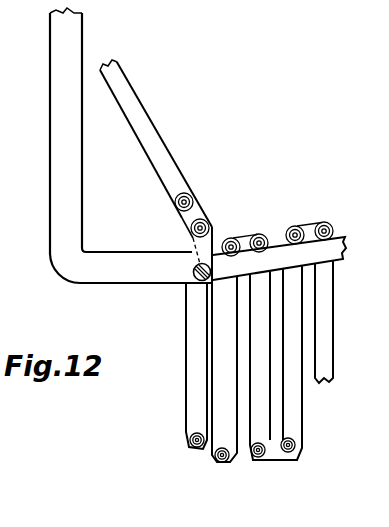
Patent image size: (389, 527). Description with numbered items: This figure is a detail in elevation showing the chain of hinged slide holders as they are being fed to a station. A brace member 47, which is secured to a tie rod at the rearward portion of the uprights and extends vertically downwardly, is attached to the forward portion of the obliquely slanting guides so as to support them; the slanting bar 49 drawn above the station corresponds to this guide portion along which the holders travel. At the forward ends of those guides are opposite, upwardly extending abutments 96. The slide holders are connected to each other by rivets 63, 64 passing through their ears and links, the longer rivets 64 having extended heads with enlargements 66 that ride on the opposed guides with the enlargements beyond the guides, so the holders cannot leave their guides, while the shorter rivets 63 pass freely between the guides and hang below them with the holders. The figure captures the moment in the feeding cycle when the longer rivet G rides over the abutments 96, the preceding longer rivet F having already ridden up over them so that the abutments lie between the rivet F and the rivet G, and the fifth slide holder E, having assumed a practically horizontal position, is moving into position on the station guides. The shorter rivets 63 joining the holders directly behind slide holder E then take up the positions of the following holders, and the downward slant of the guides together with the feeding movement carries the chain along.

The brace member 47 is at (58, 200).
The sliding bar 49 is at (138, 126).
The abutments 96 is at (190, 238).
The enlargements 66 is at (255, 235).
The rivets 64 is at (320, 226).
The rivets 63 is at (222, 462).
The fifth slide holder E is at (152, 160).
The longer rivet F is at (225, 168).
The longer rivet G is at (210, 232).